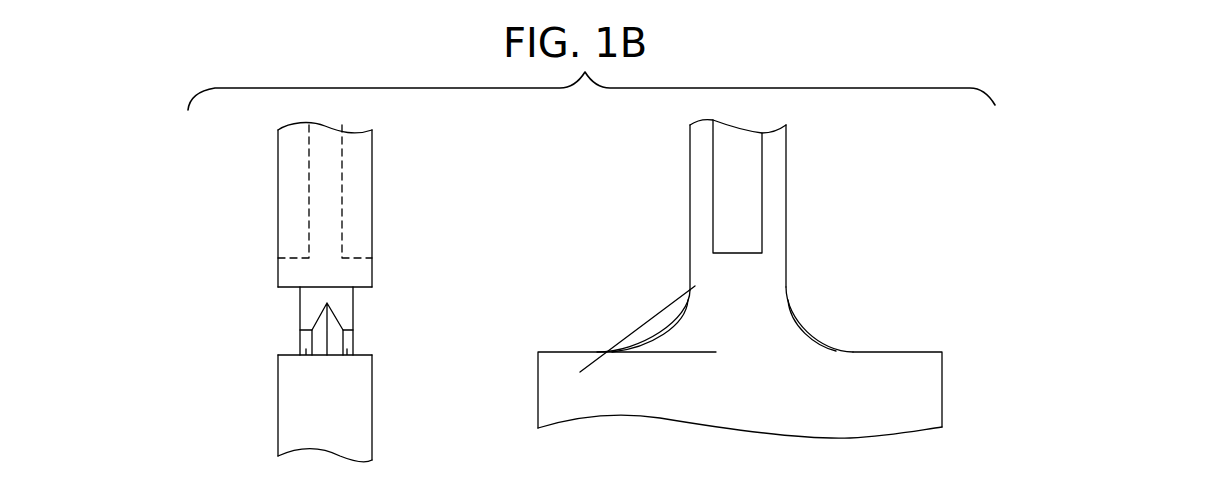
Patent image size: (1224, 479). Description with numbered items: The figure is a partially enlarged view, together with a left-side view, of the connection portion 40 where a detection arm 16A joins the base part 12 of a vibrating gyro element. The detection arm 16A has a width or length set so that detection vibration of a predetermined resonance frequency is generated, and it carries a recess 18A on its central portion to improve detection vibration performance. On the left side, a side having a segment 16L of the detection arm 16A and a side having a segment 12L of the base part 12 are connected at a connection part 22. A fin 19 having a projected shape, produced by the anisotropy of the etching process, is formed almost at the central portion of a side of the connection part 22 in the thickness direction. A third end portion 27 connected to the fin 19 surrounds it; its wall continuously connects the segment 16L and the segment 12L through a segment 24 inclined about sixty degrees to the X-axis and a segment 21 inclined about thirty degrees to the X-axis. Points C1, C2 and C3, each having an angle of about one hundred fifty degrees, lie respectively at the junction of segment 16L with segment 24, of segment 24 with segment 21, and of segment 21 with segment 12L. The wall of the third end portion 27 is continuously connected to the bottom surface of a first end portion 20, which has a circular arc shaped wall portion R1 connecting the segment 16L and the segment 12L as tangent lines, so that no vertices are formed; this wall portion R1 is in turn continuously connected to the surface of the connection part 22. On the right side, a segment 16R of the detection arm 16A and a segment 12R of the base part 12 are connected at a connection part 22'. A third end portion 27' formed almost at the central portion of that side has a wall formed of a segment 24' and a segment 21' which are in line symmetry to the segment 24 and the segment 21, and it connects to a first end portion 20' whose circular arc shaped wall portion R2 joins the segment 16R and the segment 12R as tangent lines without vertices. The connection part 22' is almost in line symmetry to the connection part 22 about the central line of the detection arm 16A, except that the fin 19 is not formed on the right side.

The base part 12 is at (372, 412).
The segment of the base part 12L is at (538, 350).
The segment of the base part 12R is at (924, 350).
The detection arm 16A is at (372, 197).
The segment of the detection arm 16L is at (690, 140).
The segment of the detection arm 16R is at (786, 137).
The recess 18A is at (290, 157).
The fin 19 is at (333, 342).
The first end portion 20 is at (469, 365).
The segment 21 is at (650, 352).
The connection part 22 is at (644, 377).
The segment 24 is at (637, 302).
The third end portion 27 is at (425, 313).
The connection portion 40 is at (605, 242).
The wall portion R1 is at (290, 312).
The wall portion R2 is at (824, 331).
The point C1 is at (689, 289).
The point C2 is at (670, 311).
The point C3 is at (622, 345).
The first end portion 20' is at (835, 266).
The segment 21' is at (822, 352).
The connection part 22' is at (816, 345).
The segment 24' is at (810, 268).
The third end portion 27' is at (878, 316).